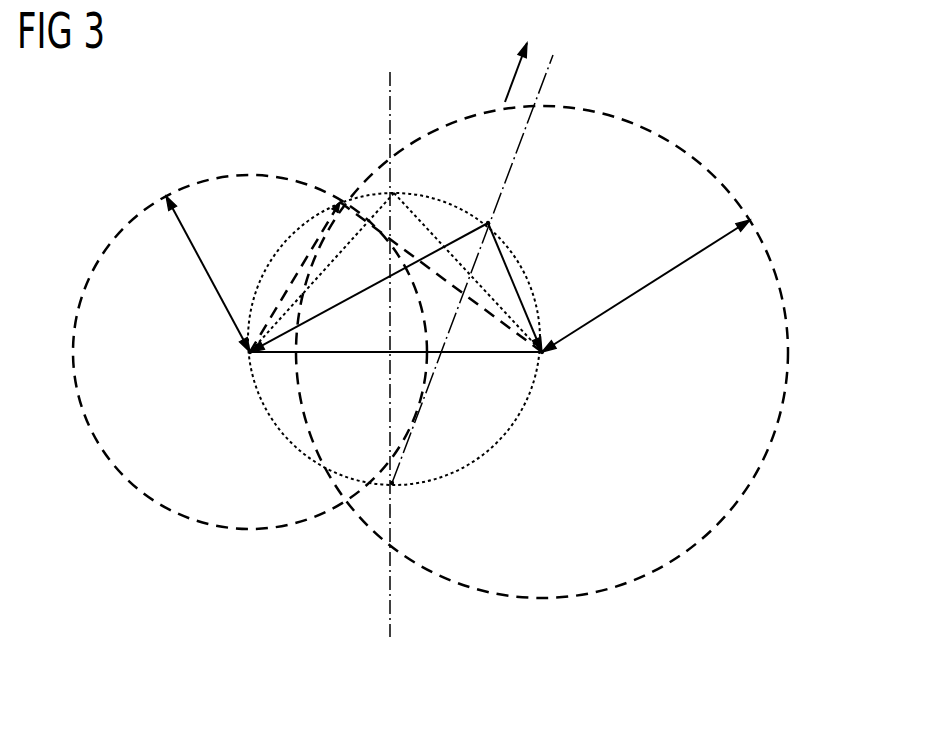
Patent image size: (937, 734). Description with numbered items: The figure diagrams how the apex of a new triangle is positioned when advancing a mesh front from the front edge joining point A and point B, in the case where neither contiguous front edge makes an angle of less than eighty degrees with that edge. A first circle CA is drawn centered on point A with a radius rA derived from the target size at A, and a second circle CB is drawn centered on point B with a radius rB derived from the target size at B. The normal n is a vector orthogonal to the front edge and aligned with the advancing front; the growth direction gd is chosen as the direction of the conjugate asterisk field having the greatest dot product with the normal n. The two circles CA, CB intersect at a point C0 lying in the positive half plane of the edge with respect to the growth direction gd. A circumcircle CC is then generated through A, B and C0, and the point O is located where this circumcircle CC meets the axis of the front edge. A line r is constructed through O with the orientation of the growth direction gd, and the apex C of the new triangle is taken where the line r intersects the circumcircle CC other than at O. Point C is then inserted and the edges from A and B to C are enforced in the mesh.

The first circle CA is at (80, 298).
The second circle CB is at (780, 405).
The circumcircle CC is at (282, 430).
The normal n is at (388, 88).
The growth direction gd is at (551, 68).
The line r is at (512, 80).
The radius of first circle rA is at (205, 277).
The radius of second circle rB is at (640, 293).
The intersection of two circles C0 is at (490, 224).
The apex of new triangle C is at (340, 200).
The point A is at (247, 355).
The point B is at (544, 354).
The point of intersection O is at (388, 484).